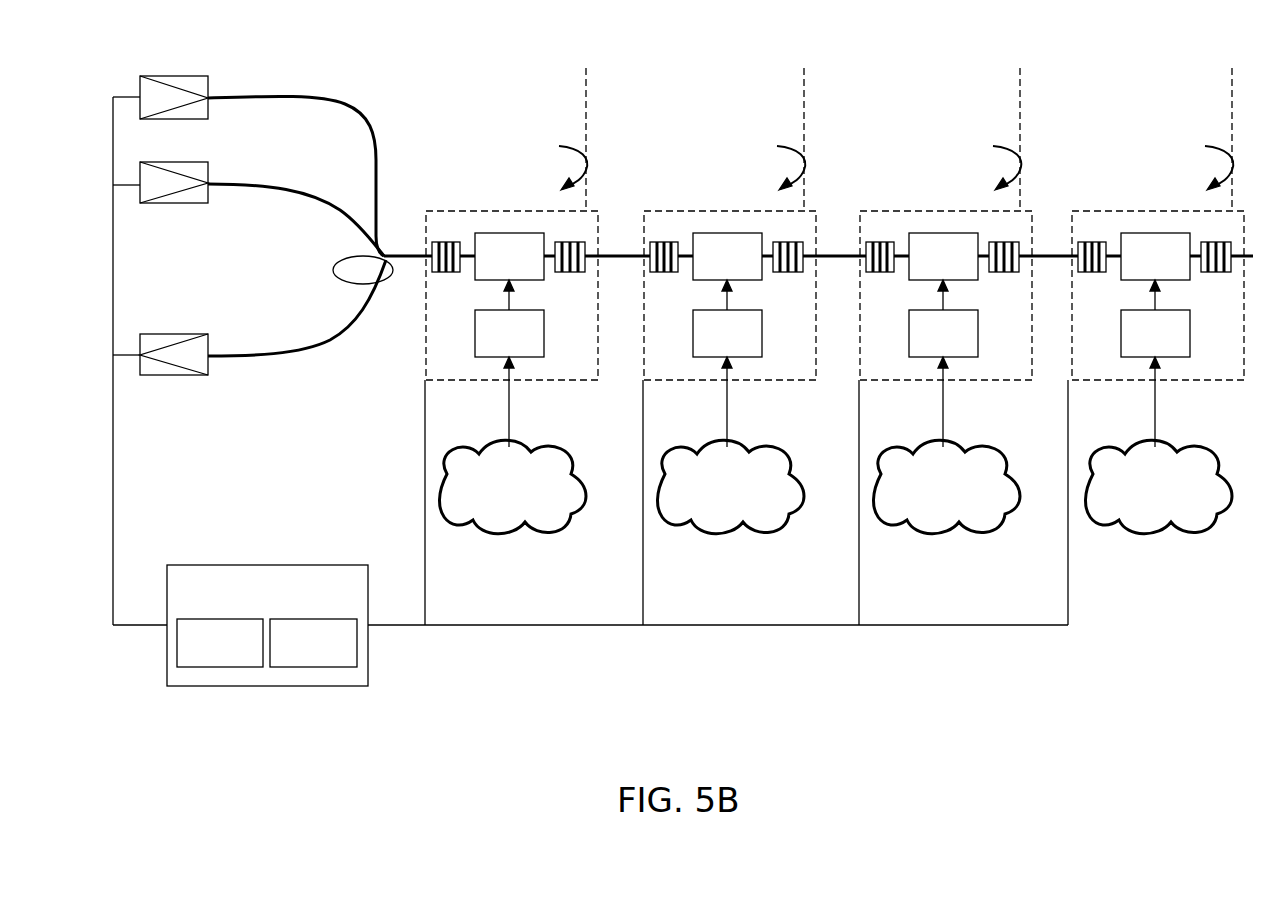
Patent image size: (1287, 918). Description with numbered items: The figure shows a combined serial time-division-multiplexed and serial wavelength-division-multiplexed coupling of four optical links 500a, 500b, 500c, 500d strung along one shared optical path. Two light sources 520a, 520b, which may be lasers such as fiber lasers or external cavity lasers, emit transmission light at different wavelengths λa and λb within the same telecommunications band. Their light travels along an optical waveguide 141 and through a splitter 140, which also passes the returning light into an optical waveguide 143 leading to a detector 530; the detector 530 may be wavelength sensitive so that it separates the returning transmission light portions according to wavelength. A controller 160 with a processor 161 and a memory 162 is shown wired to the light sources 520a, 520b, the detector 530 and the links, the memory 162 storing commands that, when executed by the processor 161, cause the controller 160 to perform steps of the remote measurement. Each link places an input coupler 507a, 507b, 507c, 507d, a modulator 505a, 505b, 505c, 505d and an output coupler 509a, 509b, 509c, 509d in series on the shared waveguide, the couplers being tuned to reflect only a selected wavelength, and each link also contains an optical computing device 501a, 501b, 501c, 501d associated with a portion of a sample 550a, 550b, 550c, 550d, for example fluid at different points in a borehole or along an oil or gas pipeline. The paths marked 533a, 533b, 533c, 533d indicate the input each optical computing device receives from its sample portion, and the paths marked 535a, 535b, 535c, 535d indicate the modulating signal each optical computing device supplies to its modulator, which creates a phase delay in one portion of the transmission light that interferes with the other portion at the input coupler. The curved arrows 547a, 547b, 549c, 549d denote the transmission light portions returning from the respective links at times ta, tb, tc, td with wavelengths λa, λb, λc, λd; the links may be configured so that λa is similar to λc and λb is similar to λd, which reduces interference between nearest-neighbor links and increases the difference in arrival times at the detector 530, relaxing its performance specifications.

The splitter 140 is at (348, 280).
The optical waveguide 141 is at (357, 108).
The optical waveguide 143 is at (325, 342).
The controller 160 is at (245, 607).
The processor 161 is at (220, 643).
The memory 162 is at (313, 643).
The light source 520a is at (165, 204).
The light source 520b is at (172, 75).
The detector 530 is at (178, 376).
The optical link 500a is at (591, 376).
The optical link 500b is at (809, 376).
The optical link 500c is at (1025, 376).
The optical link 500d is at (1237, 376).
The optical computing device 501a is at (487, 344).
The optical computing device 501b is at (705, 344).
The optical computing device 501c is at (921, 344).
The optical computing device 501d is at (1133, 344).
The modulator 505a is at (487, 267).
The modulator 505b is at (705, 267).
The modulator 505c is at (921, 267).
The modulator 505d is at (1133, 267).
The input coupler 507a is at (452, 248).
The input coupler 507b is at (670, 248).
The input coupler 507c is at (886, 248).
The input coupler 507d is at (1098, 248).
The output coupler 509a is at (571, 273).
The output coupler 509b is at (789, 273).
The output coupler 509c is at (1005, 273).
The output coupler 509d is at (1217, 273).
The sensor input signal 533a is at (509, 415).
The sensor input signal 533b is at (727, 415).
The sensor input signal 533c is at (943, 415).
The sensor input signal 533d is at (1155, 415).
The sensor output signal 535a is at (505, 298).
The sensor output signal 535b is at (723, 298).
The sensor output signal 535c is at (939, 298).
The sensor output signal 535d is at (1151, 298).
The reflected optical signal 547a is at (554, 156).
The reflected optical signal 547b is at (772, 156).
The transmission light portion 549c is at (988, 156).
The transmission light portion 549d is at (1200, 156).
The sample 550a is at (483, 503).
The sample 550b is at (701, 503).
The sample 550c is at (917, 503).
The sample 550d is at (1129, 503).